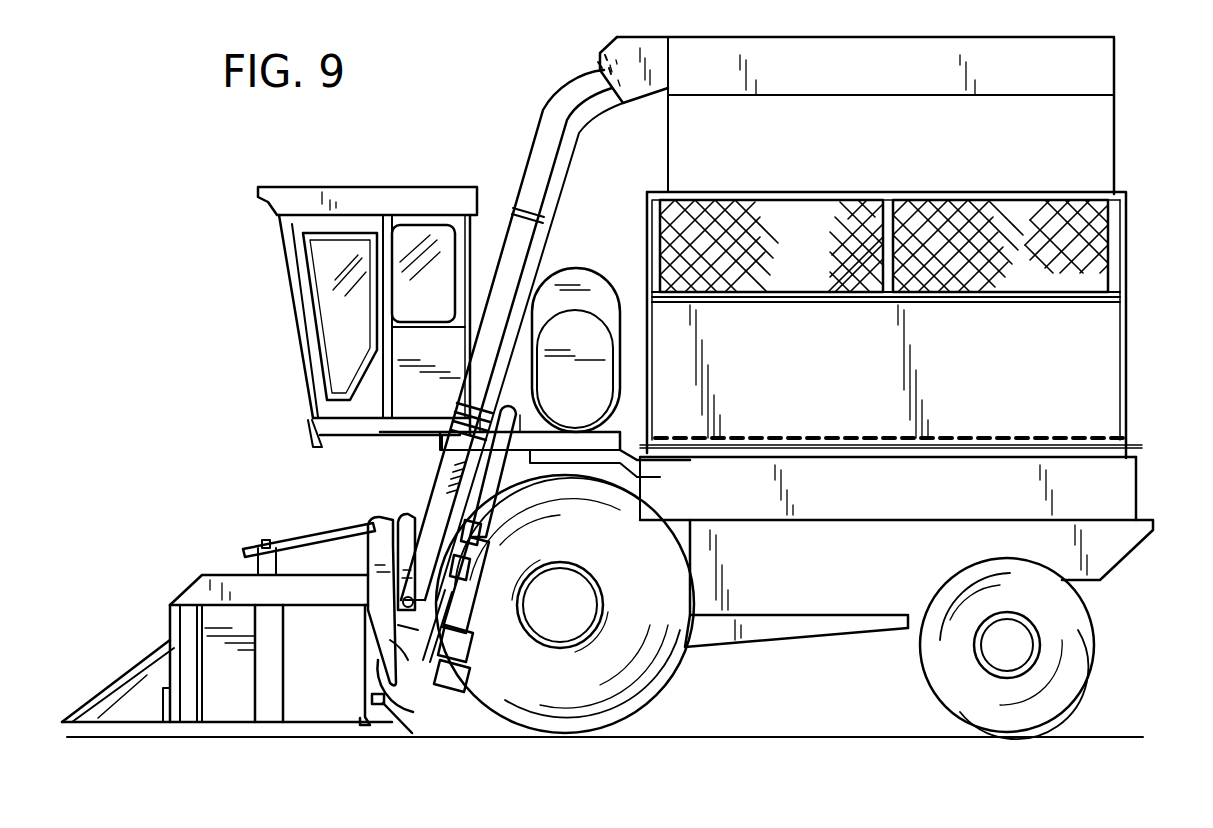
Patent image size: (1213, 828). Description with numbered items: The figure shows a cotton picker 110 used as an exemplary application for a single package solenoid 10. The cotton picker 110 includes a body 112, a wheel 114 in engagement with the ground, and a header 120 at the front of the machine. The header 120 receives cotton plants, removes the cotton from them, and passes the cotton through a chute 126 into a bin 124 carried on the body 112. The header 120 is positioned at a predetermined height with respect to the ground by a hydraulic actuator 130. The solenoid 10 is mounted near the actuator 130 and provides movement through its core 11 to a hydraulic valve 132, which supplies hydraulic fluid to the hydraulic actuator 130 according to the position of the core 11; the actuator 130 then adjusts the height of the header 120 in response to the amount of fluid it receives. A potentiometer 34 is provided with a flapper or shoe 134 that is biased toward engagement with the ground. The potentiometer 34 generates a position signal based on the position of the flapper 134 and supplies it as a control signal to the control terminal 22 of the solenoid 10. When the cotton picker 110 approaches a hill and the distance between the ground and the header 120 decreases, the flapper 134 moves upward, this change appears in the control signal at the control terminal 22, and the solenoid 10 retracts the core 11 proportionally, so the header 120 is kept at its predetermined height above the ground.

The cotton picker 110 is at (198, 304).
The header 120 is at (176, 582).
The bin 124 is at (1138, 92).
The chute 126 is at (524, 122).
The control terminal 22 is at (436, 520).
The solenoid 10 is at (478, 533).
The core 11 is at (470, 561).
The hydraulic actuator 130 is at (442, 642).
The hydraulic valve 132 is at (454, 604).
The potentiometer 34 is at (377, 704).
The flapper 134 is at (390, 708).
The wheel 114 is at (622, 662).
The body 112 is at (770, 632).